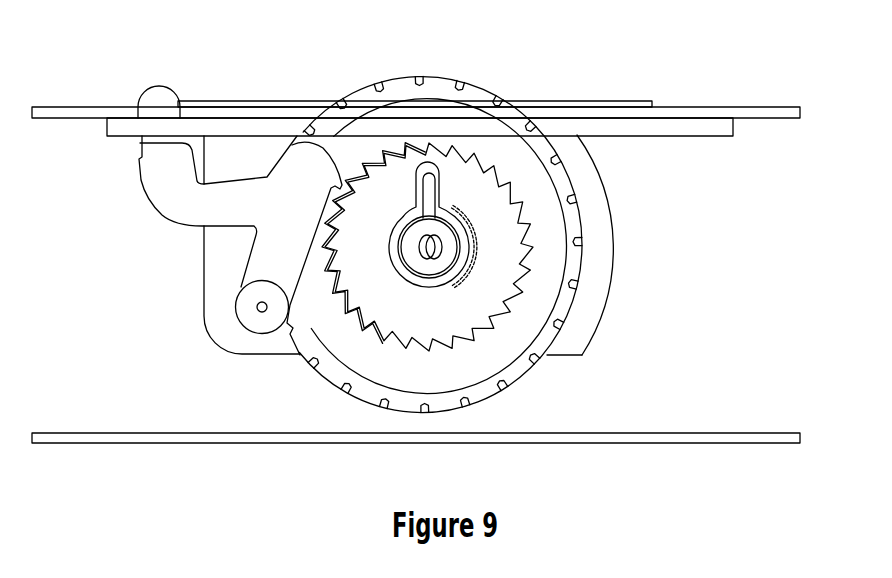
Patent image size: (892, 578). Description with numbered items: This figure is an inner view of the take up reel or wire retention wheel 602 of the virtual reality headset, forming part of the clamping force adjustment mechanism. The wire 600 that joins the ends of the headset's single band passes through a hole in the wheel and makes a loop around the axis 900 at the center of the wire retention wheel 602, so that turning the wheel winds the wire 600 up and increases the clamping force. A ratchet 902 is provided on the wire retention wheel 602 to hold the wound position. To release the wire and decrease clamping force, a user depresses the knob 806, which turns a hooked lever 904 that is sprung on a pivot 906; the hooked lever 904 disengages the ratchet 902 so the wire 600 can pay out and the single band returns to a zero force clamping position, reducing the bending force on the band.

The wire 600 is at (65, 105).
The knob 806 is at (160, 88).
The wire retention wheel 602 is at (548, 227).
The ratchet 902 is at (487, 250).
The axis 900 is at (445, 270).
The hooked lever 904 is at (329, 178).
The pivot 906 is at (249, 311).